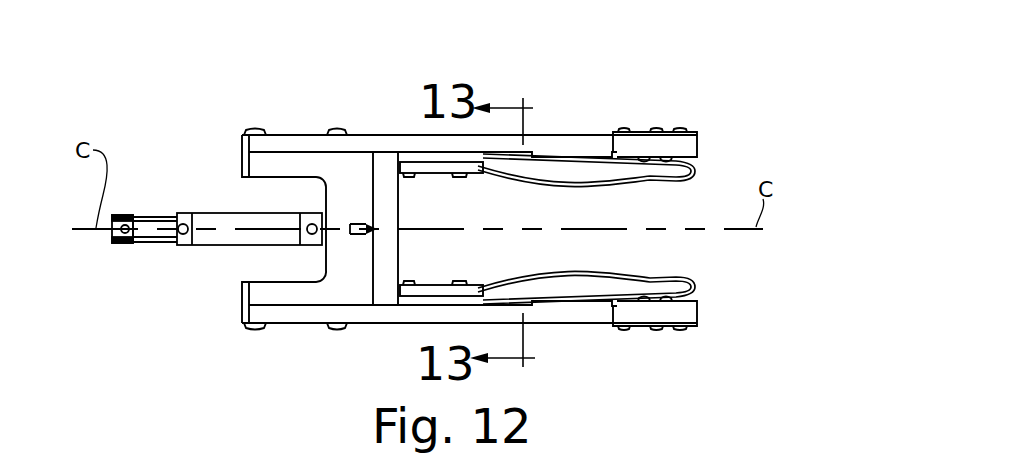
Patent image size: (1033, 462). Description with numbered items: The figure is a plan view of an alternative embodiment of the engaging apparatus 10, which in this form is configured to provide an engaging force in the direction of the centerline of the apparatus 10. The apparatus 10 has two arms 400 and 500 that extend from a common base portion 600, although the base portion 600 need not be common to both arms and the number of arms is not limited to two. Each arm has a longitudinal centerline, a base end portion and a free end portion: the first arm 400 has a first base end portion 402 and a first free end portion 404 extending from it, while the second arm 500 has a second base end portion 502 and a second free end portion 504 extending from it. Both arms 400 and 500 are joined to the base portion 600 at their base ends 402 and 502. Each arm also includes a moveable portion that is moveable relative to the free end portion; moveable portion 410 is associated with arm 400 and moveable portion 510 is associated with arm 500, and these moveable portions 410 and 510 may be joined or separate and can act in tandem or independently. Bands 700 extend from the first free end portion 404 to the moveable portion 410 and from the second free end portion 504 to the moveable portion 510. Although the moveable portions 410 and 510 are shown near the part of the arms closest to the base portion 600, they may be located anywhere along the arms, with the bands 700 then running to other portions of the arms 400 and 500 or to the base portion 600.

The engaging apparatus 10 is at (584, 104).
The first arm 400 is at (595, 140).
The first base end portion 402 is at (282, 134).
The first free end portion 404 is at (698, 145).
The first moveable portion 410 is at (437, 168).
The second arm 500 is at (582, 313).
The second base end portion 502 is at (263, 313).
The second free end portion 504 is at (698, 311).
The second moveable portion 510 is at (430, 287).
The base portion 600 is at (318, 292).
The bands 700 is at (672, 171).